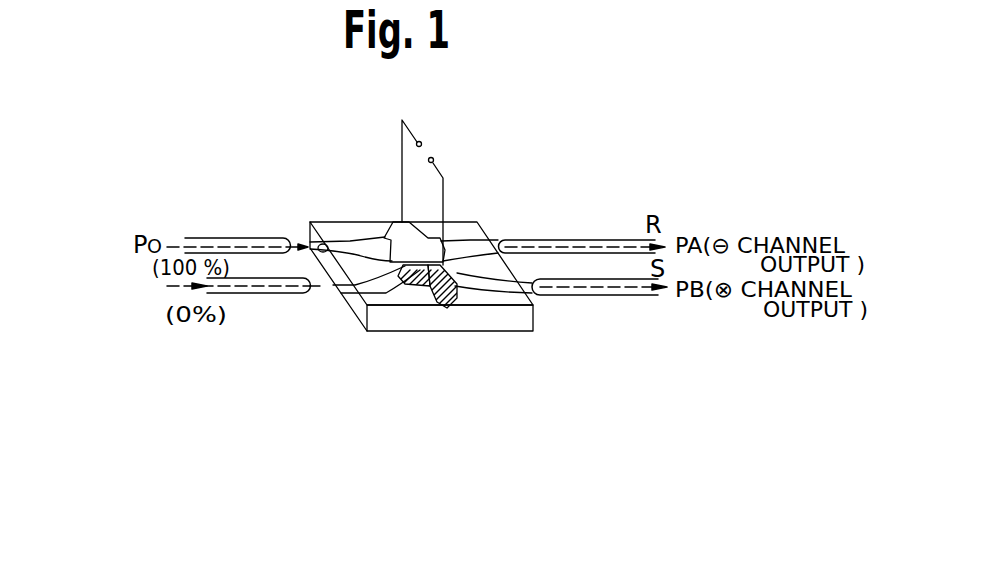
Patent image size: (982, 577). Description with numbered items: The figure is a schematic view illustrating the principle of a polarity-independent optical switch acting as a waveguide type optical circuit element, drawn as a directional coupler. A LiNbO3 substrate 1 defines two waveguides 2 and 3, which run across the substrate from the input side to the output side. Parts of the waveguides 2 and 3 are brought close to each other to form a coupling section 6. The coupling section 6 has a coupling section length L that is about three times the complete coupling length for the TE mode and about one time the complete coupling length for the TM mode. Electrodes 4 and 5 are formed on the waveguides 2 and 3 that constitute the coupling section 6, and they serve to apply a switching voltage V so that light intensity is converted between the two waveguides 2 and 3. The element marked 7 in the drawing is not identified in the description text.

The LiNbO3 substrate 1 is at (507, 323).
The waveguide 2 is at (356, 255).
The waveguide 3 is at (384, 294).
The electrode 4 is at (385, 236).
The electrode 5 is at (432, 300).
The coupling section 6 is at (425, 290).
The switch / voltage source 7 is at (428, 152).